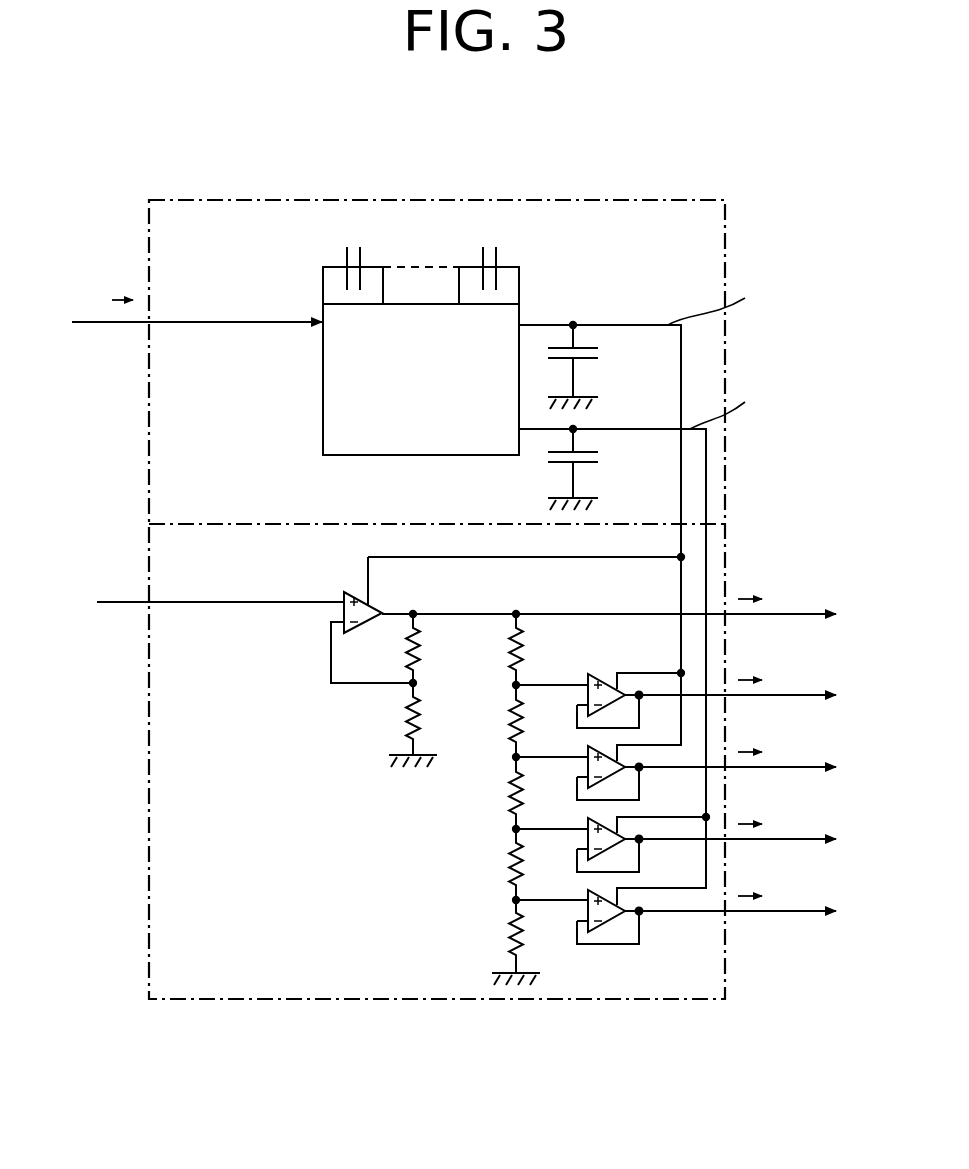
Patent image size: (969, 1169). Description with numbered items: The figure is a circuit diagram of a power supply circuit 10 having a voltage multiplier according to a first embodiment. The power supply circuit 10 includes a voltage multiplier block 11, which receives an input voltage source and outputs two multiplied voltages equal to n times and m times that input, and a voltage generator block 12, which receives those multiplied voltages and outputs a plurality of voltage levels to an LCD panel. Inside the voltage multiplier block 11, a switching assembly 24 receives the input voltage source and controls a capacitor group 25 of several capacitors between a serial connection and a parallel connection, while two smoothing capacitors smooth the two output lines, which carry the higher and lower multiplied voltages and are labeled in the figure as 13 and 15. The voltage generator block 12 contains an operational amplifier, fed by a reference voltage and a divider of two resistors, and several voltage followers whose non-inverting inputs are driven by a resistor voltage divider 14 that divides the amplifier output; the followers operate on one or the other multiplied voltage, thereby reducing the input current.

The power supply circuit 10 is at (836, 166).
The voltage multiplier block 11 is at (148, 427).
The voltage generator block 12 is at (148, 733).
The first output node VLCD1 13 is at (551, 323).
The voltage divider 14 is at (425, 879).
The second output node VLCD2 15 is at (618, 429).
The switching assembly 24 is at (322, 401).
The capacitor group 25 is at (316, 232).